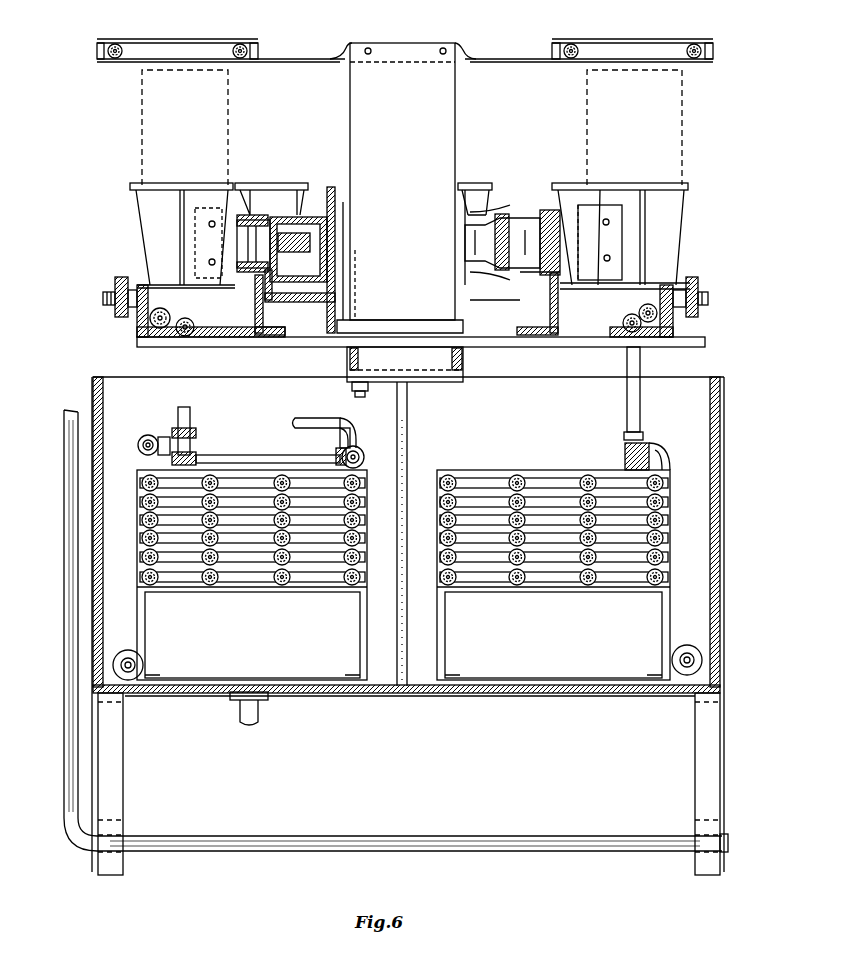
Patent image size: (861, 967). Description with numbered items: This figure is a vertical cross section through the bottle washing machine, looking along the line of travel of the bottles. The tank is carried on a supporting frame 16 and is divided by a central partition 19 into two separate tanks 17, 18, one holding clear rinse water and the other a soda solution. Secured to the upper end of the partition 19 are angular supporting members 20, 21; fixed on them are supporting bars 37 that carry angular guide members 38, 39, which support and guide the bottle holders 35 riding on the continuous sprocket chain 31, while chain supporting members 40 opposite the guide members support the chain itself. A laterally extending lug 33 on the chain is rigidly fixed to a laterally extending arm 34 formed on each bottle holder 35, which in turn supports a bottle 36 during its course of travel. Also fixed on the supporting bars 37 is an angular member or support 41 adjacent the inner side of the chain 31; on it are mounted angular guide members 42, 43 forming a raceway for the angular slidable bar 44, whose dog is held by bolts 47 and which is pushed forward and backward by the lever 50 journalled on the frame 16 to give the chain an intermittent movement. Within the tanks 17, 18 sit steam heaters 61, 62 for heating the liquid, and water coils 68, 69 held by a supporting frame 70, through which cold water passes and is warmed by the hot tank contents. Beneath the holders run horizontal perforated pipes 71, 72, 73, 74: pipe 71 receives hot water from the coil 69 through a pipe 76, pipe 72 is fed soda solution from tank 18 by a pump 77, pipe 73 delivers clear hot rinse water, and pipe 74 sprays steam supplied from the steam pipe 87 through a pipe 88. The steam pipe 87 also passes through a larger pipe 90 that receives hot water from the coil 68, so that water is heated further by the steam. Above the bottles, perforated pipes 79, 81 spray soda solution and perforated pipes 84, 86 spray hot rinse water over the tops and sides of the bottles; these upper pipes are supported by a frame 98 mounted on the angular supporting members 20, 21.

The supporting frame 16 is at (122, 775).
The tank 17 is at (110, 578).
The tank 18 is at (700, 448).
The partition 19 is at (404, 530).
The angular supporting member 20 is at (430, 386).
The angular supporting member 21 is at (370, 386).
The sprocket chain 31 is at (280, 205).
The laterally extending lug 33 is at (235, 200).
The laterally extending arm 34 is at (590, 285).
The bottle holder 35 is at (474, 185).
The bottle 36 is at (228, 117).
The supporting bar 37 is at (530, 340).
The angular guide member 38 is at (113, 318).
The angular guide member 39 is at (698, 318).
The chain supporting member 40 is at (260, 338).
The angular member or support 41 is at (344, 225).
The angular guide member 42 is at (319, 205).
The angular guide member 43 is at (320, 300).
The angular slidable bar 44 is at (325, 270).
The bolt 47 is at (296, 258).
The lever 50 is at (63, 558).
The steam heater 61 is at (128, 648).
The steam heater 62 is at (688, 645).
The water coil 68 is at (258, 585).
The water coil 69 is at (565, 585).
The supporting frame 70 is at (367, 640).
The perforated pipe 71 is at (630, 314).
The perforated pipe 72 is at (648, 303).
The perforated pipe 73 is at (175, 306).
The perforated pipe 74 is at (178, 338).
The pipe 76 is at (642, 408).
The pump 77 is at (262, 712).
The perforated pipe 79 is at (697, 42).
The perforated pipe 81 is at (572, 42).
The perforated pipe 84 is at (247, 60).
The perforated pipe 86 is at (108, 63).
The steam pipe 87 is at (140, 447).
The pipe 88 is at (222, 462).
The pipe 90 is at (360, 450).
The frame 98 is at (412, 47).